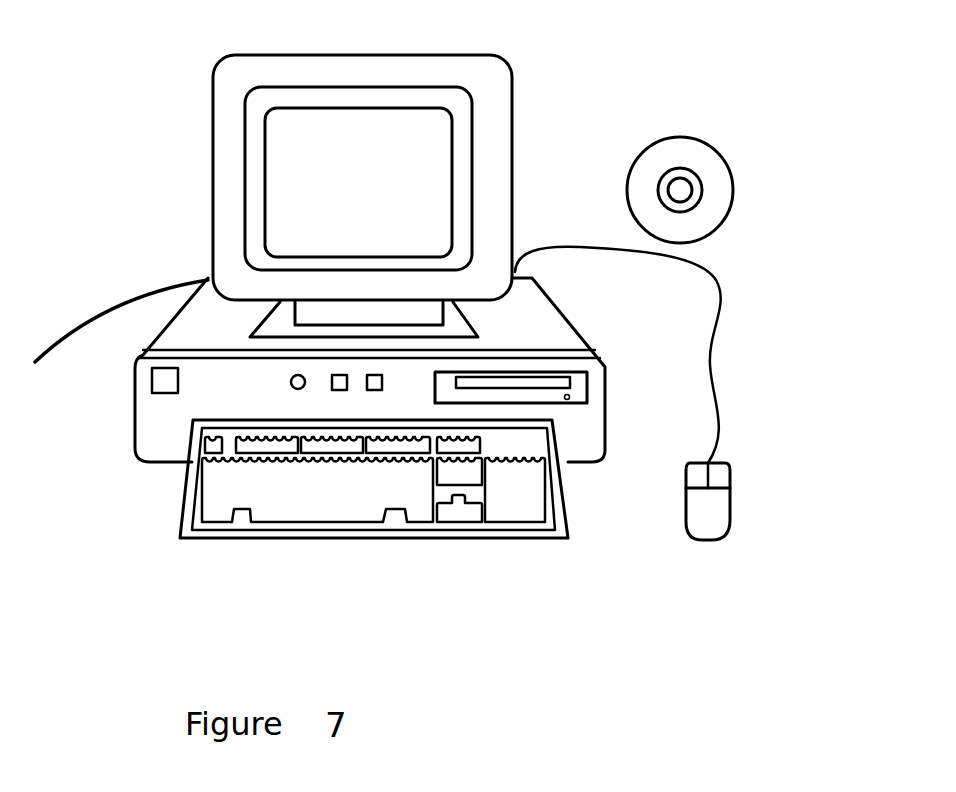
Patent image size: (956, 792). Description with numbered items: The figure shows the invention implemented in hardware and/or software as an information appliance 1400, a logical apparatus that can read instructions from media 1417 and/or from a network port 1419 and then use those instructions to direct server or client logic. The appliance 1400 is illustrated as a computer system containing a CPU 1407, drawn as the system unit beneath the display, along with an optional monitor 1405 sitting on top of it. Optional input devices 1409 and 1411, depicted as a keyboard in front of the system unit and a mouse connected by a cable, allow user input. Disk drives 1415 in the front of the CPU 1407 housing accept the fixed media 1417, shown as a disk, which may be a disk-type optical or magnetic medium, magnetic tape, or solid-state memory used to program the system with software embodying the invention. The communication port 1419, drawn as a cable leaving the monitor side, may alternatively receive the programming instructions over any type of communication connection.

The information appliance 1400 is at (640, 72).
The monitor 1405 is at (428, 155).
The CPU 1407 is at (557, 322).
The input device 1409 is at (265, 542).
The input device 1411 is at (710, 517).
The disk drive 1415 is at (587, 387).
The fixed media 1417 is at (708, 138).
The communication port 1419 is at (80, 315).